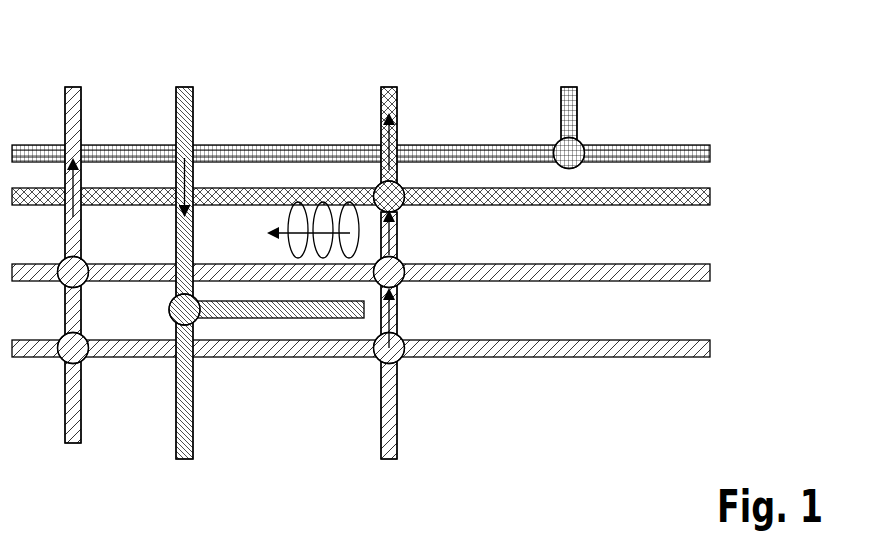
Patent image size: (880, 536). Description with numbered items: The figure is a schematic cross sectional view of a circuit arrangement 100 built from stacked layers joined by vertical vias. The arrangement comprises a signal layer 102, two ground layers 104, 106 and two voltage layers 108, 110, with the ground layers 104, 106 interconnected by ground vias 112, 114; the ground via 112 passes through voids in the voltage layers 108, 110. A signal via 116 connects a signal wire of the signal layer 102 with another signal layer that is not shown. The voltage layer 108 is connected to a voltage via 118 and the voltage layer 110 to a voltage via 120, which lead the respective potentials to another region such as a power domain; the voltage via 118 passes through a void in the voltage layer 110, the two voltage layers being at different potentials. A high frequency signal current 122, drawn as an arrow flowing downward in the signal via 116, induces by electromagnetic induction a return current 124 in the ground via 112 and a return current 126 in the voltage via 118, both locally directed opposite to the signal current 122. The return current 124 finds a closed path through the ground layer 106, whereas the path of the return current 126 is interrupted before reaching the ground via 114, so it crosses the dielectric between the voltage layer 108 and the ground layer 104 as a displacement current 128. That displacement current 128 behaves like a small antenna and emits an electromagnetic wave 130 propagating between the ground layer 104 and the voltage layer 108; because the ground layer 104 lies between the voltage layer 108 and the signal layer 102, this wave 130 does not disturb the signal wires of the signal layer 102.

The circuit arrangement 100 is at (709, 102).
The signal layer 102 is at (283, 310).
The ground layer 104 is at (710, 272).
The ground layer 106 is at (710, 348).
The voltage layer 108 is at (710, 195).
The voltage layer 110 is at (710, 153).
The ground via 112 is at (73, 443).
The ground via 114 is at (390, 459).
The signal via 116 is at (185, 459).
The voltage via 118 is at (390, 87).
The voltage via 120 is at (569, 87).
The signal current 122 is at (186, 175).
The return current 124 is at (78, 208).
The return current 126 is at (397, 138).
The displacement current 128 is at (397, 238).
The electromagnetic wave 130 is at (287, 217).